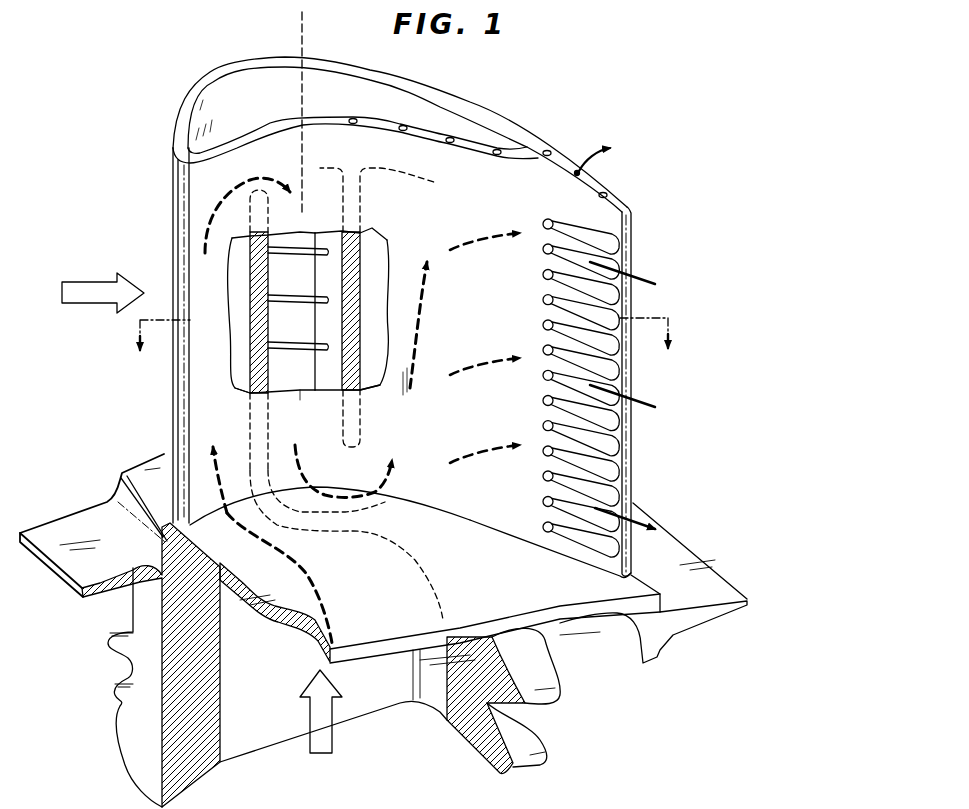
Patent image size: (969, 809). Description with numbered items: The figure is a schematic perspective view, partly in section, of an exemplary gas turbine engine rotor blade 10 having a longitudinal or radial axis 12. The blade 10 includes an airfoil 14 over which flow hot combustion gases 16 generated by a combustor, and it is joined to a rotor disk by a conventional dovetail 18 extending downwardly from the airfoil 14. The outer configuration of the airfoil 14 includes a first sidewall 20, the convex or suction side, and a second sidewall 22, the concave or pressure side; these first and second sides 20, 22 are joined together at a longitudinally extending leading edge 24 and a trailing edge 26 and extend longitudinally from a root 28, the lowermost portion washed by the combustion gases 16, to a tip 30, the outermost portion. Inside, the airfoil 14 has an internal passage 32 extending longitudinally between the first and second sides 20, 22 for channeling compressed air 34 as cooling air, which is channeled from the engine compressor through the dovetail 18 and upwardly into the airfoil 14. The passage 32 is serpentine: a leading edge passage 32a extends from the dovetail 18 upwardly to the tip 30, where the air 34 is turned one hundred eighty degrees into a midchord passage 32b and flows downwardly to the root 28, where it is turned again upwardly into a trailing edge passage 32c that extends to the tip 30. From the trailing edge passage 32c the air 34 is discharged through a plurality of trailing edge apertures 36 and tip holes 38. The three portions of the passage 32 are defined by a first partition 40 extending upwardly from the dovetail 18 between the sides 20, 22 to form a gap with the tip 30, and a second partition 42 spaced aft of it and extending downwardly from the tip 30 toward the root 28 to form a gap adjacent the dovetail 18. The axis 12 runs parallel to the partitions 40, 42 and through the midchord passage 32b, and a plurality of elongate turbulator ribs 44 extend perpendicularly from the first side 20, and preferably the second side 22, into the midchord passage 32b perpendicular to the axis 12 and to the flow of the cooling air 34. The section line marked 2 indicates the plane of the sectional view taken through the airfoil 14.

The gas turbine engine rotor blade 10 is at (489, 102).
The longitudinal or radial axis 12 is at (303, 34).
The airfoil 14 is at (173, 192).
The hot combustion gases 16 is at (85, 283).
The dovetail 18 is at (110, 640).
The first sidewall 20 is at (179, 368).
The second sidewall 22 is at (190, 400).
The leading edge 24 is at (190, 247).
The trailing edge 26 is at (633, 242).
The root 28 is at (578, 558).
The tip 30 is at (596, 183).
The internal passage 32 is at (336, 333).
The leading edge passage 32a is at (250, 733).
The midchord passage 32b is at (303, 235).
The trailing edge passage 32c is at (387, 502).
The compressed air 34 is at (325, 733).
The trailing edge apertures 36 is at (592, 405).
The tip holes 38 is at (551, 150).
The first partition 40 is at (232, 279).
The second partition 42 is at (370, 244).
The elongate turbulator ribs 44 is at (318, 290).
The section line 2- 2 is at (404, 336).